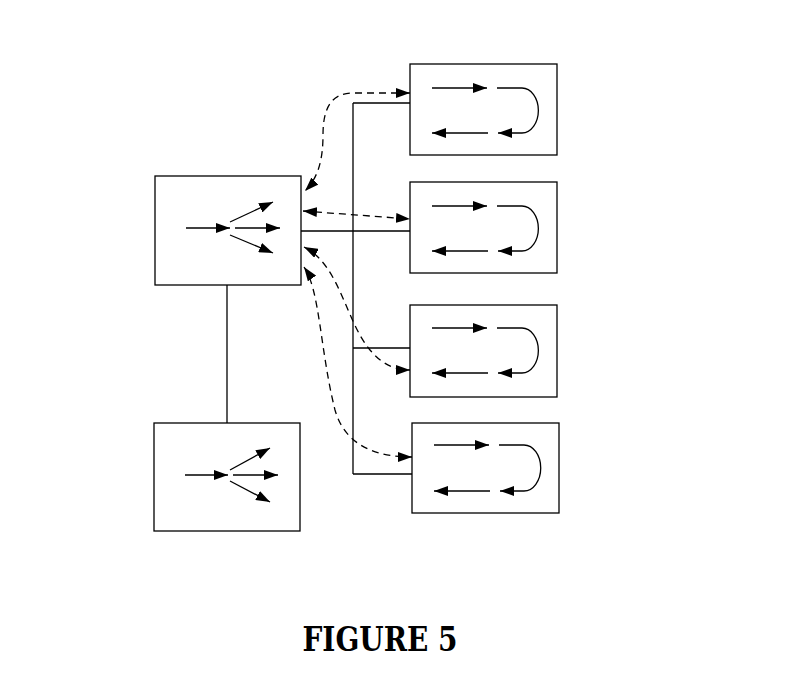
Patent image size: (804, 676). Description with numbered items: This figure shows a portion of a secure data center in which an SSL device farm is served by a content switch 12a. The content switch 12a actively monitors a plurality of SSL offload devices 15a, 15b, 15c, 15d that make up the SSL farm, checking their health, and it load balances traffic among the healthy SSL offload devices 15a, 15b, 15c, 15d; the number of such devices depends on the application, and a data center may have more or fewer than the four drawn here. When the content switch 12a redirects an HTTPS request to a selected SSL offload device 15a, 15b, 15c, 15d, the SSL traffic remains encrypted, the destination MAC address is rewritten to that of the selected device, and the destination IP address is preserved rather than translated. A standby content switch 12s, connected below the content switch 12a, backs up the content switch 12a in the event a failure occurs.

The content switch 12a is at (155, 271).
The standby content switch 12s is at (154, 513).
The SSL offload device 15a is at (557, 97).
The SSL offload device 15b is at (557, 215).
The SSL offload device 15c is at (557, 335).
The SSL offload device 15d is at (559, 453).